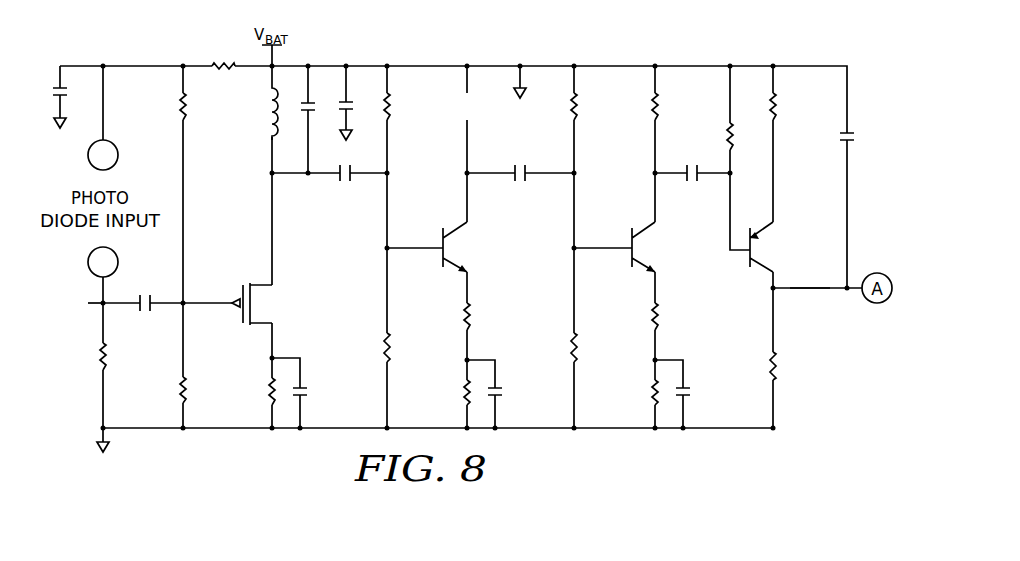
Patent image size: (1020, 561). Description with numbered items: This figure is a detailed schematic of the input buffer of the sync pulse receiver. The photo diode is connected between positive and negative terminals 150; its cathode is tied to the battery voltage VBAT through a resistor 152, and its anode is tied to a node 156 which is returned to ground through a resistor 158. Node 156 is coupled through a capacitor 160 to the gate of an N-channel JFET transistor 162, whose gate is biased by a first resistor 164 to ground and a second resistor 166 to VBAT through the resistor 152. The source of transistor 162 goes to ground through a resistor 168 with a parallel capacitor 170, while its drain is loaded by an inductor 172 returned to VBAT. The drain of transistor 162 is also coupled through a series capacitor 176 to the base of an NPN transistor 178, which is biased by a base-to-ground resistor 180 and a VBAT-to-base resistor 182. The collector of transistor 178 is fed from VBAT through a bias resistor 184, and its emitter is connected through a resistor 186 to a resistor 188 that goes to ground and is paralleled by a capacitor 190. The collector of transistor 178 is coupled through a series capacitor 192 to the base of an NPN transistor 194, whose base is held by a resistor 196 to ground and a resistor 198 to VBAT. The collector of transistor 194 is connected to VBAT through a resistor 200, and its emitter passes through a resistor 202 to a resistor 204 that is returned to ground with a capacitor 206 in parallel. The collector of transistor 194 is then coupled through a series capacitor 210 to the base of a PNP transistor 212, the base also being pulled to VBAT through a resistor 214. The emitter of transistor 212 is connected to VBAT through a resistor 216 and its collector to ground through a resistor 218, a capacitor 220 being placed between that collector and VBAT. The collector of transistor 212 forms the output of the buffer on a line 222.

The positive and negative terminals 150 is at (88, 155).
The resistor 152 is at (225, 61).
The node 156 is at (88, 303).
The resistor 158 is at (98, 356).
The capacitor 160 is at (144, 317).
The N-channel JFET transistor 162 is at (243, 289).
The first resistor 164 is at (178, 388).
The second resistor 166 is at (180, 100).
The resistor 168 is at (267, 388).
The capacitor 170 is at (309, 393).
The inductor 172 is at (261, 117).
The series capacitor 176 is at (345, 186).
The NPN transistor 178 is at (453, 230).
The base-to-ground resistor 180 is at (384, 345).
The VBAT-to-base resistor 182 is at (393, 112).
The bias resistor 184 is at (472, 112).
The resistor 186 is at (463, 315).
The resistor 188 is at (463, 393).
The capacitor 190 is at (504, 391).
The series capacitor 192 is at (518, 186).
The NPN transistor 194 is at (641, 231).
The resistor 196 is at (570, 345).
The resistor 198 is at (580, 112).
The resistor 200 is at (660, 109).
The resistor 202 is at (650, 315).
The resistor 204 is at (650, 393).
The capacitor 206 is at (696, 393).
The series capacitor 210 is at (692, 186).
The PNP transistor 212 is at (747, 268).
The resistor 214 is at (724, 136).
The resistor 216 is at (778, 109).
The resistor 218 is at (778, 368).
The capacitor 220 is at (840, 140).
The line 222 is at (807, 292).